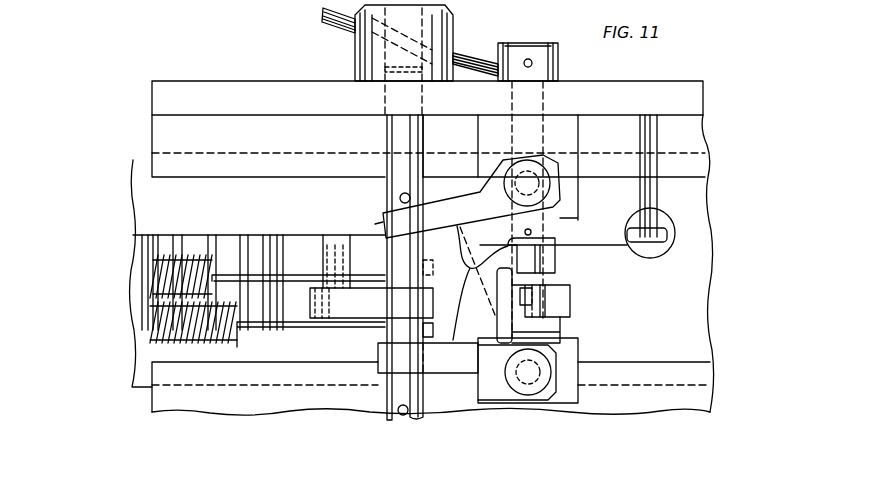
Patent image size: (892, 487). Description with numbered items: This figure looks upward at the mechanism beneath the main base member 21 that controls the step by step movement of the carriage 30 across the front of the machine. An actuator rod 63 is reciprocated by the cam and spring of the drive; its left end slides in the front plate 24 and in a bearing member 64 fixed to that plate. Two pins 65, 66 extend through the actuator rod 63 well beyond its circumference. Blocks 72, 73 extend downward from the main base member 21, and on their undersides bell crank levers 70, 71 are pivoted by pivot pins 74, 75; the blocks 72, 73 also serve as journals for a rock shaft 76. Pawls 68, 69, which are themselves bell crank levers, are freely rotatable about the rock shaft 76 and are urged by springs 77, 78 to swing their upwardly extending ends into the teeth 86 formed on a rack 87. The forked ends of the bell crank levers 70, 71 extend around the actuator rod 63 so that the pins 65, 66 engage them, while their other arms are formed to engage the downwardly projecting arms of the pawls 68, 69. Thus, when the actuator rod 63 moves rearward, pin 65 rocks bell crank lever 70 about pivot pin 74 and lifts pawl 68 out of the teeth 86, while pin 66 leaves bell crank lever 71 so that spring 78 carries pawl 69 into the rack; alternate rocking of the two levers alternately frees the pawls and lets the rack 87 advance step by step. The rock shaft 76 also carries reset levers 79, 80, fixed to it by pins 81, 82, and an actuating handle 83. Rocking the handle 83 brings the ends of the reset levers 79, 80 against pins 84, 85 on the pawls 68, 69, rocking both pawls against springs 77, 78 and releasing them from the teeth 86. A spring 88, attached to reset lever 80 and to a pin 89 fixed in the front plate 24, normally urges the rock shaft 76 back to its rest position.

The main base member 21 is at (700, 143).
The front plate 24 is at (656, 90).
The carriage 30 is at (137, 193).
The actuator rod 63 is at (400, 420).
The bearing member 64 is at (445, 30).
The pin 65 is at (399, 198).
The pin 66 is at (397, 412).
The pawl 68 is at (343, 310).
The pawl 69 is at (342, 247).
The bell crank lever 70 is at (445, 192).
The bell crank lever 71 is at (458, 372).
The block 72 is at (572, 141).
The block 73 is at (572, 353).
The pivot pin 74 is at (545, 195).
The pivot pin 75 is at (532, 387).
The rock shaft 76 is at (530, 42).
The spring 77 is at (215, 340).
The spring 78 is at (195, 250).
The reset lever 79 is at (518, 332).
The reset lever 80 is at (613, 240).
The pin 81 is at (537, 330).
The pin 82 is at (531, 233).
The actuating handle 83 is at (330, 24).
The pin 84 is at (425, 328).
The pin 85 is at (388, 232).
The teeth 86 is at (248, 235).
The rack 87 is at (257, 238).
The spring 88 is at (664, 224).
The pin 89 is at (650, 143).